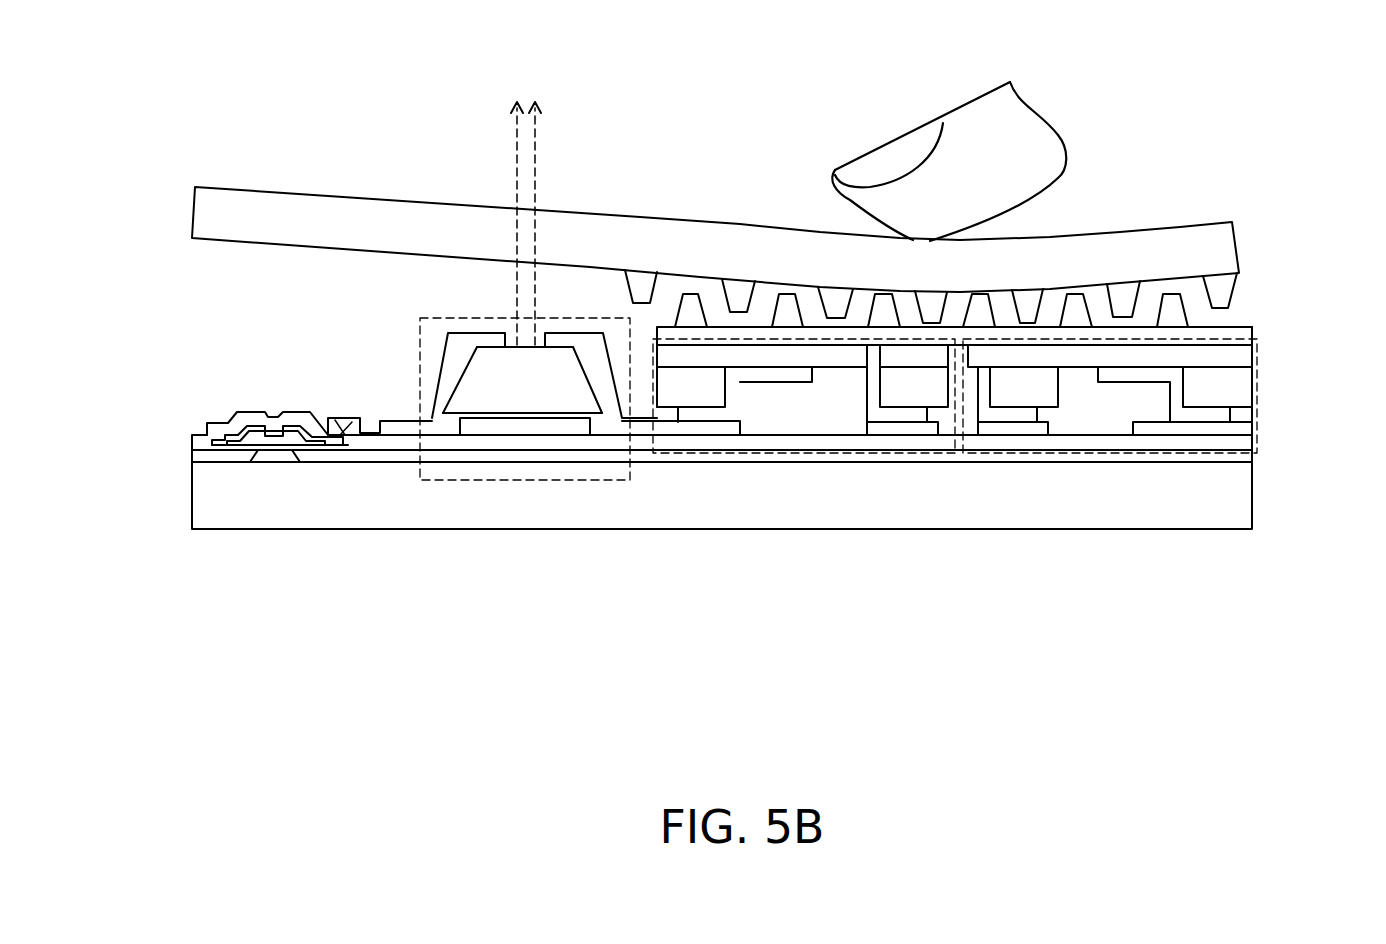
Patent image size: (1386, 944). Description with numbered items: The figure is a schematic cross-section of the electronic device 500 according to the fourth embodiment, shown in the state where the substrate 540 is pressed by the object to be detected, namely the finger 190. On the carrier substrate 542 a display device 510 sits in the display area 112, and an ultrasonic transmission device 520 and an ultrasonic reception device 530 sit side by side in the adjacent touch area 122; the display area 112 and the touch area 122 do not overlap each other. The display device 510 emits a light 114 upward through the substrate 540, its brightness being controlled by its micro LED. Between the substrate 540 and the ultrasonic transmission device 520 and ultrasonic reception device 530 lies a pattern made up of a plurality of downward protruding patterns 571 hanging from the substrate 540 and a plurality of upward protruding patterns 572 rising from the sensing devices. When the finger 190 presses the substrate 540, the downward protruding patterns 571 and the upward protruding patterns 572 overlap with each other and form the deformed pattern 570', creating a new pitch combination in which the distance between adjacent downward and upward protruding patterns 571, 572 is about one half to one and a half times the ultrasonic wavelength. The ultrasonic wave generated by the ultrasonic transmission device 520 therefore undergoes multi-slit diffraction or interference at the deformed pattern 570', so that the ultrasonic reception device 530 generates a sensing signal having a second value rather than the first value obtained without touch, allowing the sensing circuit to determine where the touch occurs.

The light 114 is at (513, 152).
The finger 190 is at (1020, 130).
The substrate 540 is at (1222, 243).
The carrier substrate 542 is at (1235, 500).
The display device 510 is at (528, 482).
The ultrasonic transmission device 520 is at (857, 455).
The ultrasonic reception device 530 is at (1082, 455).
The downward protruding patterns 571 is at (642, 285).
The upward protruding patterns 572 is at (787, 310).
The deformed pattern 570' is at (741, 136).
The display area 112 is at (622, 613).
The touch area 122 is at (1253, 613).
The electronic device 500 is at (1341, 721).